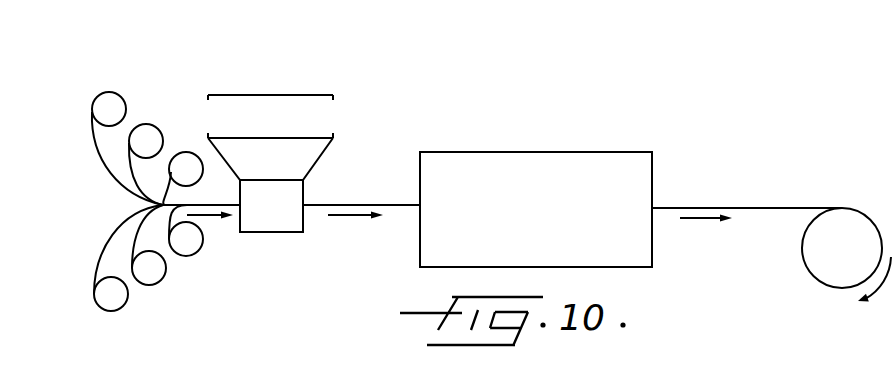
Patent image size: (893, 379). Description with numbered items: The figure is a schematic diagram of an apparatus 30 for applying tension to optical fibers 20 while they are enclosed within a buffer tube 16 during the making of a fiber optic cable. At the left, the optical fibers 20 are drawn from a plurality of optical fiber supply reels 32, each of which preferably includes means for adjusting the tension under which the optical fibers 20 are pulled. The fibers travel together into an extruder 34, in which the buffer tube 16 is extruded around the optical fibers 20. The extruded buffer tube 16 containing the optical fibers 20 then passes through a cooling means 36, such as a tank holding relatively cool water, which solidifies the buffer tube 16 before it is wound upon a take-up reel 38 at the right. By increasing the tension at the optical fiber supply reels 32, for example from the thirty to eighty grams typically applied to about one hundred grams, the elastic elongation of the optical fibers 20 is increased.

The apparatus 30 is at (425, 66).
The optical fibers 20 is at (88, 138).
The optical fiber supply reels 32 is at (185, 250).
The extruder 34 is at (275, 222).
The cooling means 36 is at (493, 160).
The buffer tube 16 is at (778, 208).
The take-up reel 38 is at (822, 264).